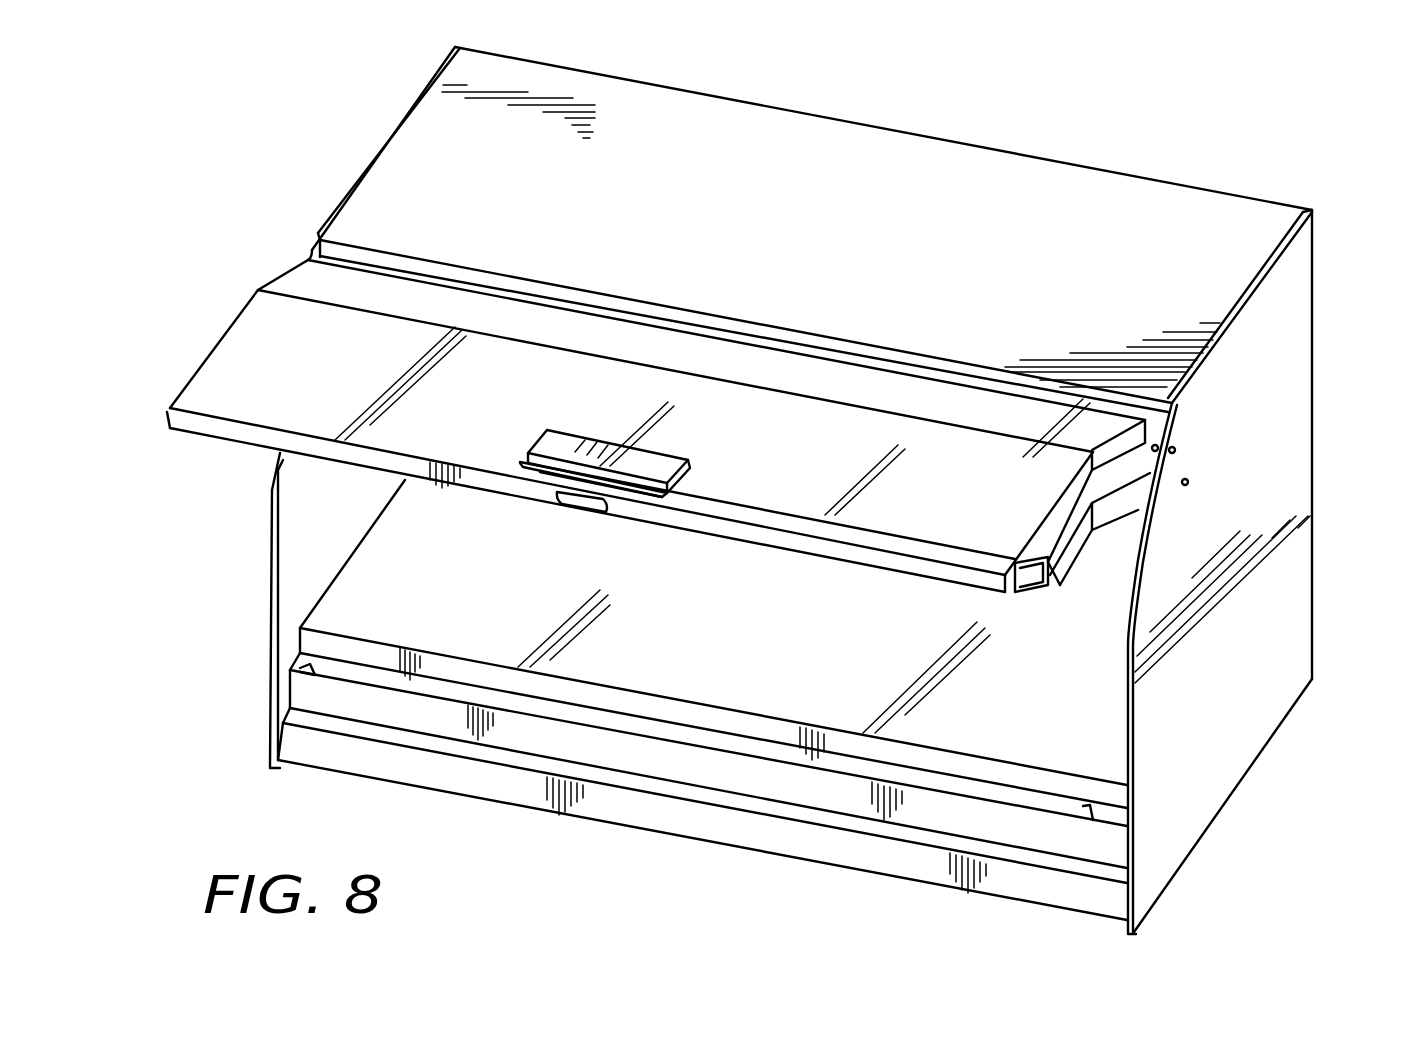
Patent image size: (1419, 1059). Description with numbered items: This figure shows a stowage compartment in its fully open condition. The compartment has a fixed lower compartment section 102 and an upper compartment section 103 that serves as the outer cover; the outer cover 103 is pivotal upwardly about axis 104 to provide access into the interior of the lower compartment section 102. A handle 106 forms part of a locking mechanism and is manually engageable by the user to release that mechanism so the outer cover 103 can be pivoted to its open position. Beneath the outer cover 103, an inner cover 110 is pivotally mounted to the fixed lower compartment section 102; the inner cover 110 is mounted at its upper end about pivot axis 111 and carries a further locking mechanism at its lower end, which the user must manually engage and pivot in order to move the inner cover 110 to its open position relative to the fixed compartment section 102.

The lower compartment section 102 is at (1293, 572).
The upper compartment section 103 is at (873, 392).
The axis 104 is at (1175, 449).
The handle 106 is at (657, 458).
The inner cover 110 is at (1070, 553).
The pivot axis 111 is at (1190, 482).